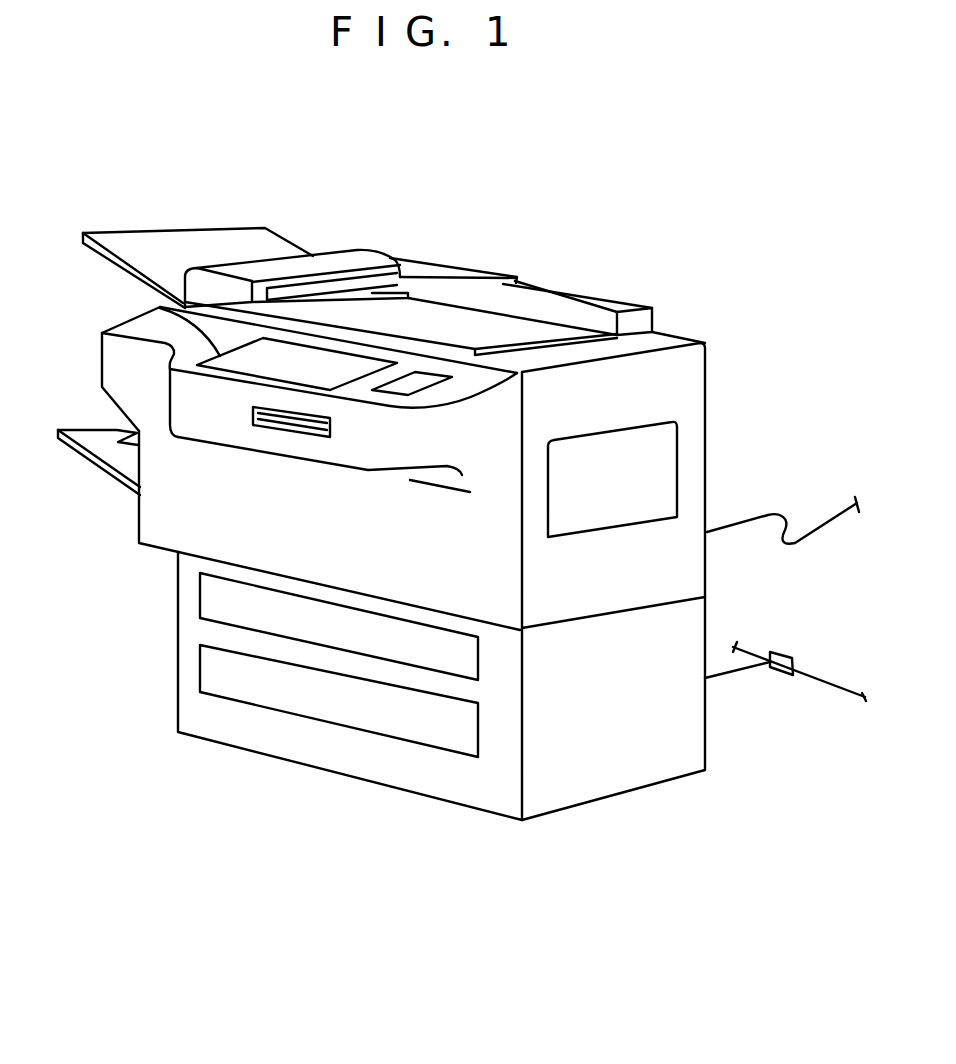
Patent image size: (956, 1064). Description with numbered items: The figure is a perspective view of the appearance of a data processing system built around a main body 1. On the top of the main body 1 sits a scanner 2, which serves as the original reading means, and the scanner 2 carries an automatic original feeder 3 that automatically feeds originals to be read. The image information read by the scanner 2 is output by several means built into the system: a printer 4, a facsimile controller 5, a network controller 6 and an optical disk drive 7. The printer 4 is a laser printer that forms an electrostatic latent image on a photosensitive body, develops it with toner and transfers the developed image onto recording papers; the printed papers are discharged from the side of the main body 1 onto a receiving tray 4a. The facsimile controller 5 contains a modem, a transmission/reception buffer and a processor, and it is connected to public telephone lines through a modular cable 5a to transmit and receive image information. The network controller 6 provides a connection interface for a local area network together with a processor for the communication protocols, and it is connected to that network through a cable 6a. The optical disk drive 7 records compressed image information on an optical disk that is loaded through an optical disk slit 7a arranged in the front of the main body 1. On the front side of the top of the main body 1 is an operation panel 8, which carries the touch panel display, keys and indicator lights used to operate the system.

The main body 1 is at (715, 360).
The scanner 2 is at (543, 292).
The automatic original feeder 3 is at (290, 243).
The printer 4 is at (170, 522).
The receiving tray 4a is at (89, 462).
The facsimile controller 5 is at (687, 560).
The modular cable 5a is at (790, 512).
The network controller 6 is at (633, 753).
The cable 6a is at (777, 676).
The optical disk drive 7 is at (367, 455).
The optical disk slit 7a is at (285, 437).
The operation panel 8 is at (137, 321).